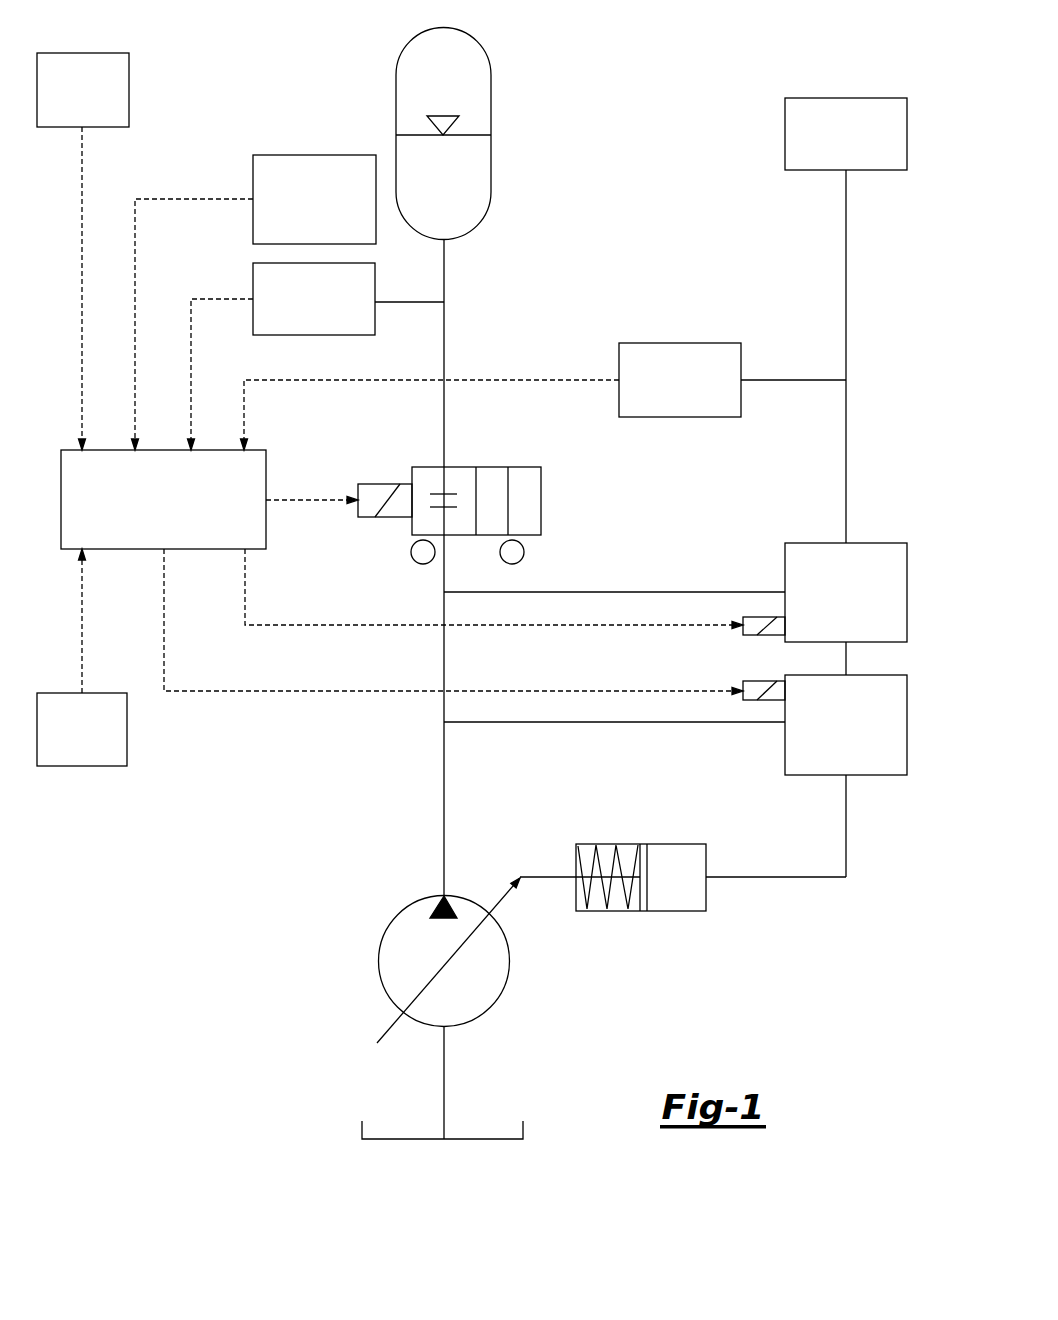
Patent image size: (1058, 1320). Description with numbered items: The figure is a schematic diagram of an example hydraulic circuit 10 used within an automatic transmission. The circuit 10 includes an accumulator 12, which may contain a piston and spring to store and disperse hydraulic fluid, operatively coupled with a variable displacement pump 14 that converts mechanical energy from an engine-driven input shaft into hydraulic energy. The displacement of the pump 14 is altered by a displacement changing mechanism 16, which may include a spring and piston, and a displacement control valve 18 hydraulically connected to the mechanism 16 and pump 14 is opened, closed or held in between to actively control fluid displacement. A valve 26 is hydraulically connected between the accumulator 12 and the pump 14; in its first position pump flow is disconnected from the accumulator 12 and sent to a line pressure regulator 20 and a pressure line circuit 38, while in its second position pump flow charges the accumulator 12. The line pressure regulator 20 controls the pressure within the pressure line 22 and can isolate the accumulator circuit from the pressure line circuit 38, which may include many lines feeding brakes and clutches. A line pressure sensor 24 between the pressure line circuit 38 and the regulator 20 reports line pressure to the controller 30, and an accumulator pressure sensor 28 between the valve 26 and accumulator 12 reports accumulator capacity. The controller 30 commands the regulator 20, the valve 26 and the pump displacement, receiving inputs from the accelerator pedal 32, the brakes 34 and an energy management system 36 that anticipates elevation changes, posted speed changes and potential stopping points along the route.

The hydraulic circuit 10 is at (690, 68).
The accumulator 12 is at (491, 95).
The variable displacement pump 14 is at (378, 963).
The displacement changing mechanism 16 is at (640, 844).
The displacement control valve 18 is at (785, 760).
The line pressure regulator 20 is at (785, 553).
The pressure line 22 is at (846, 246).
The line pressure sensor 24 is at (681, 343).
The valve 26 is at (491, 467).
The accumulator pressure sensor 28 is at (253, 276).
The controller 30 is at (163, 450).
The accelerator pedal 32 is at (127, 730).
The brakes 34 is at (130, 88).
The energy management system 36 is at (316, 155).
The pressure line circuit 38 is at (846, 98).